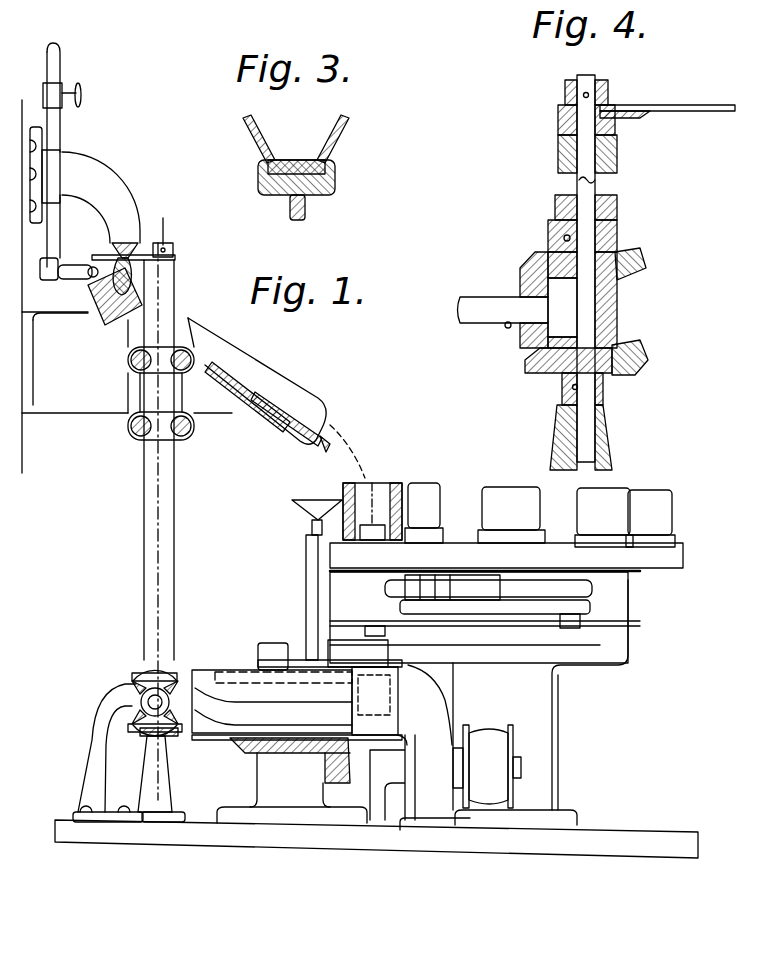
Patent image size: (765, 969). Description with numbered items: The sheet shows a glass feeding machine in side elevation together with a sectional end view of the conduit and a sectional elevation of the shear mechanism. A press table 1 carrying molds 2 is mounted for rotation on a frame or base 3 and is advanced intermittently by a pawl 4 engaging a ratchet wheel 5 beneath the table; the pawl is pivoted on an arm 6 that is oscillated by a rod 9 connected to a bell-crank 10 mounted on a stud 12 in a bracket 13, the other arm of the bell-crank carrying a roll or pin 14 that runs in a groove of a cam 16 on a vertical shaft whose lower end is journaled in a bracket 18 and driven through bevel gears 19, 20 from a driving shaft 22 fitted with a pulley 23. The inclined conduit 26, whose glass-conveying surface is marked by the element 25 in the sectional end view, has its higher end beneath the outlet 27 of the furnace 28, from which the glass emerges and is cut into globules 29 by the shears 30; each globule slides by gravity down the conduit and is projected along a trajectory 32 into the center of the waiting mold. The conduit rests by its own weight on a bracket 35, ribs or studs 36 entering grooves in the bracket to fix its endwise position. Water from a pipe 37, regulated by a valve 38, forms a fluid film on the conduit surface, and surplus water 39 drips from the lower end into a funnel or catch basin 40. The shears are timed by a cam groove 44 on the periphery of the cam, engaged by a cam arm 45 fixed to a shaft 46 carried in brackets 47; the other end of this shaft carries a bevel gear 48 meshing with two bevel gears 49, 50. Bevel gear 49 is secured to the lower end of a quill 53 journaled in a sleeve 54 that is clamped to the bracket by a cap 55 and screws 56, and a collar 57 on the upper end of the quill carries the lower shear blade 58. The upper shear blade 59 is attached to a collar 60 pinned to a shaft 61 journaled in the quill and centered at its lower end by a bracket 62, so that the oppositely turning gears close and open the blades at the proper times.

In FIG. 1, the press table 1 is at (683, 563).
In FIG. 1, the molds 2 is at (493, 485).
In FIG. 1, the frame or base 3 is at (228, 452).
In FIG. 1, the pawl 4 is at (240, 224).
In FIG. 1, the ratchet wheel 5 is at (458, 590).
In FIG. 1, the arm 6 is at (582, 610).
In FIG. 1, the rod 9 is at (452, 632).
In FIG. 1, the bell-crank 10 is at (302, 655).
In FIG. 1, the stud 12 is at (376, 650).
In FIG. 1, the bracket 13 is at (437, 722).
In FIG. 1, the roll or pin 14 is at (255, 670).
In FIG. 1, the cam 16 is at (212, 666).
In FIG. 1, the bracket 18 is at (265, 795).
In FIG. 1, the bevel gear 19 is at (248, 740).
In FIG. 1, the bevel gear 20 is at (335, 775).
In FIG. 1, the driving shaft 22 is at (521, 767).
In FIG. 1, the pulley 23 is at (505, 745).
In FIG. 1, the liner plate 25 is at (305, 422).
In FIG. 3, the liner plate 25 is at (300, 160).
In FIG. 1, the conduit 26 is at (292, 390).
In FIG. 3, the conduit 26 is at (342, 132).
In FIG. 1, the outlet 27 is at (108, 185).
In FIG. 1, the furnace 28 is at (12, 452).
In FIG. 1, the globule 29 is at (135, 280).
In FIG. 1, the shears 30 is at (175, 257).
In FIG. 1, the trajectory line 32 is at (358, 458).
In FIG. 1, the bracket 35 is at (75, 412).
In FIG. 3, the bracket 35 is at (335, 180).
In FIG. 1, the ribs or studs 36 is at (120, 318).
In FIG. 3, the ribs or studs 36 is at (312, 196).
In FIG. 1, the pipe 37 is at (55, 237).
In FIG. 1, the valve 38 is at (81, 93).
In FIG. 1, the surplus water stream 39 is at (320, 440).
In FIG. 1, the funnel or catch basin 40 is at (300, 508).
In FIG. 1, the cam groove 44 is at (277, 718).
In FIG. 1, the cam arm 45 is at (172, 733).
In FIG. 1, the shaft 46 is at (148, 692).
In FIG. 4, the shaft 46 is at (490, 320).
In FIG. 1, the brackets 47 is at (92, 757).
In FIG. 1, the bevel gear 48 is at (141, 693).
In FIG. 4, the bevel gear 48 is at (525, 268).
In FIG. 1, the bevel gear 49 is at (140, 663).
In FIG. 4, the bevel gear 49 is at (644, 270).
In FIG. 1, the bevel gear 50 is at (118, 730).
In FIG. 4, the bevel gear 50 is at (640, 352).
In FIG. 4, the quill 53 is at (617, 203).
In FIG. 1, the sleeve 54 is at (174, 583).
In FIG. 4, the sleeve 54 is at (617, 160).
In FIG. 1, the cap 55 is at (185, 345).
In FIG. 1, the screws 56 is at (136, 414).
In FIG. 1, the collar 57 is at (175, 267).
In FIG. 4, the collar 57 is at (617, 130).
In FIG. 4, the lower shear blade 58 is at (636, 116).
In FIG. 4, the upper shear blade 59 is at (667, 94).
In FIG. 4, the collar 60 is at (610, 90).
In FIG. 1, the shaft 61 is at (155, 235).
In FIG. 4, the shaft 61 is at (596, 78).
In FIG. 1, the bracket 62 is at (140, 786).
In FIG. 4, the bracket 62 is at (612, 430).